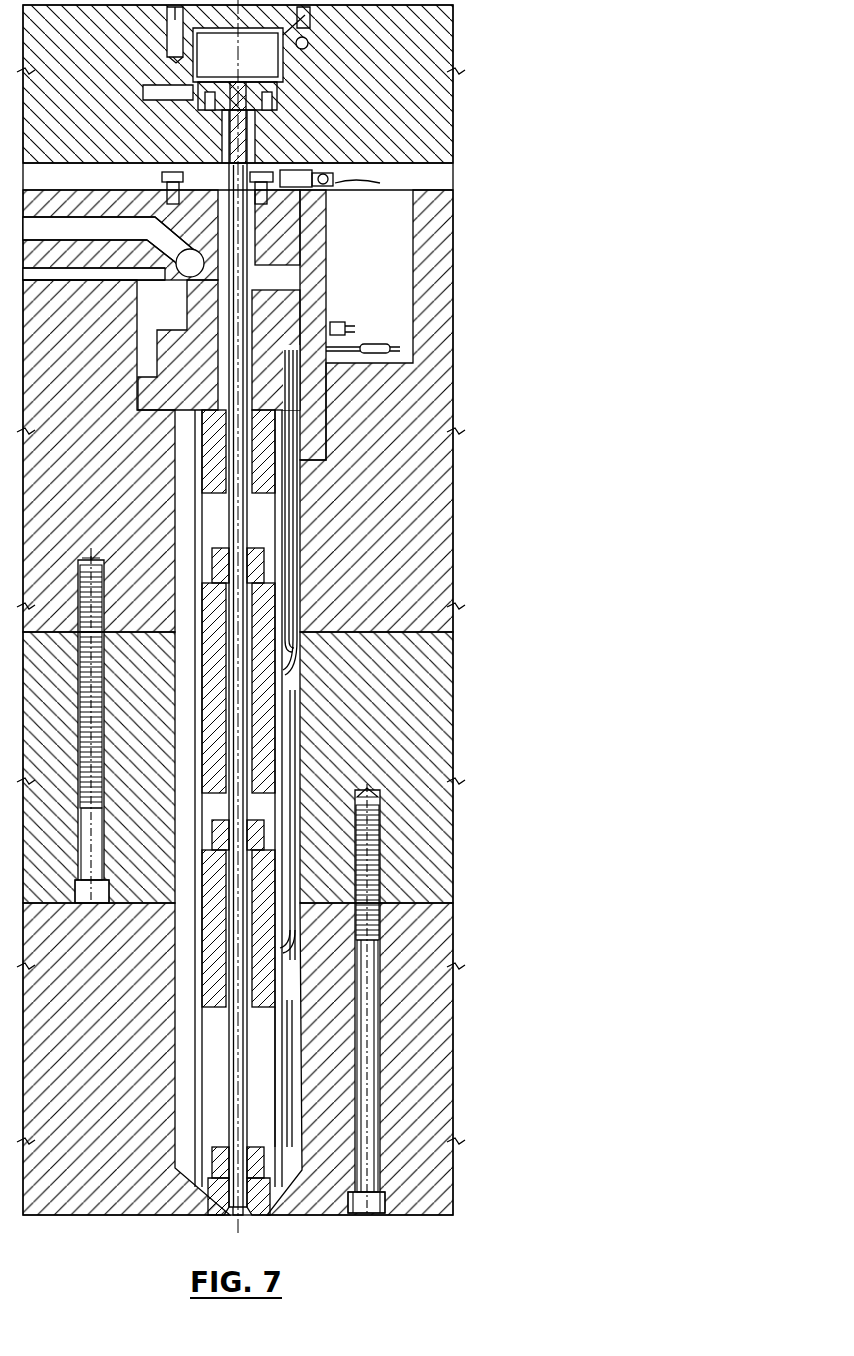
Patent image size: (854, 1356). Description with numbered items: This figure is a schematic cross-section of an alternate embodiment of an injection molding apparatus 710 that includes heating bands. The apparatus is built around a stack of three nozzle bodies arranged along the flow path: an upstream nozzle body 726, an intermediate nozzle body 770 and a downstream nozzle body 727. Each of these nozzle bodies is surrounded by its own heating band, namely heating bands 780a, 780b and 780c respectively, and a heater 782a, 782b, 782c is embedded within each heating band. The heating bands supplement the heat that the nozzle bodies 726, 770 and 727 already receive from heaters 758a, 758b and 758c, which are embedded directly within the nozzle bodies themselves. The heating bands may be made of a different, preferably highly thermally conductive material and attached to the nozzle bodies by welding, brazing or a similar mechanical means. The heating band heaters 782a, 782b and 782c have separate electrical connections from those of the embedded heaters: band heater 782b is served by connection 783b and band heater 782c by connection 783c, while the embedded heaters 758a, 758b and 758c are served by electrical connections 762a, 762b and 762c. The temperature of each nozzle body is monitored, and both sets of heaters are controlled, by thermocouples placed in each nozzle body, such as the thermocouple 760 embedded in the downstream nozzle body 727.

The injection molding apparatus 710 is at (476, 136).
The upstream nozzle body 726 is at (213, 456).
The downstream nozzle body 727 is at (205, 988).
The intermediate nozzle body 770 is at (213, 757).
The thermocouple 760 is at (285, 1182).
The electrical connection 762a is at (337, 326).
The electrical connection 762b is at (290, 643).
The electrical connection 762c is at (278, 940).
The heating band heater 782a is at (280, 483).
The heating band heater 782b is at (277, 748).
The heating band heater 782c is at (277, 1047).
The heating band 780a is at (277, 505).
The heating band 780b is at (277, 777).
The heating band 780c is at (277, 1073).
The heater 758a is at (277, 583).
The heater 758b is at (273, 852).
The heater 758c is at (273, 1107).
The electrical connection 783b is at (297, 670).
The electrical connection 783c is at (297, 963).